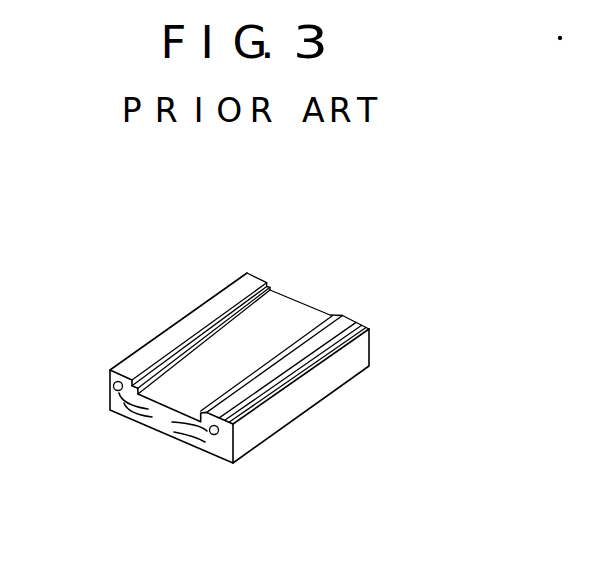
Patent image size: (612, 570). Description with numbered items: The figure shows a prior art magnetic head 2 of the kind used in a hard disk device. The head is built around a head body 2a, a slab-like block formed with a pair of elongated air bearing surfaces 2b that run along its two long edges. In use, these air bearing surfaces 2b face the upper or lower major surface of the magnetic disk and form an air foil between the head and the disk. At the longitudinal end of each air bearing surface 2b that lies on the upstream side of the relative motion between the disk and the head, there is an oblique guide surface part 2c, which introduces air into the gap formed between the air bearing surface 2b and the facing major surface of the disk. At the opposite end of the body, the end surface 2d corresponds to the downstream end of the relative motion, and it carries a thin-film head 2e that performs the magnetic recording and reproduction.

The magnetic head 2 is at (248, 213).
The head body 2a is at (292, 310).
The air bearing surface 2b is at (189, 324).
The oblique guide surface part 2c is at (253, 282).
The end surface 2d is at (219, 450).
The thin-film head 2e is at (214, 436).